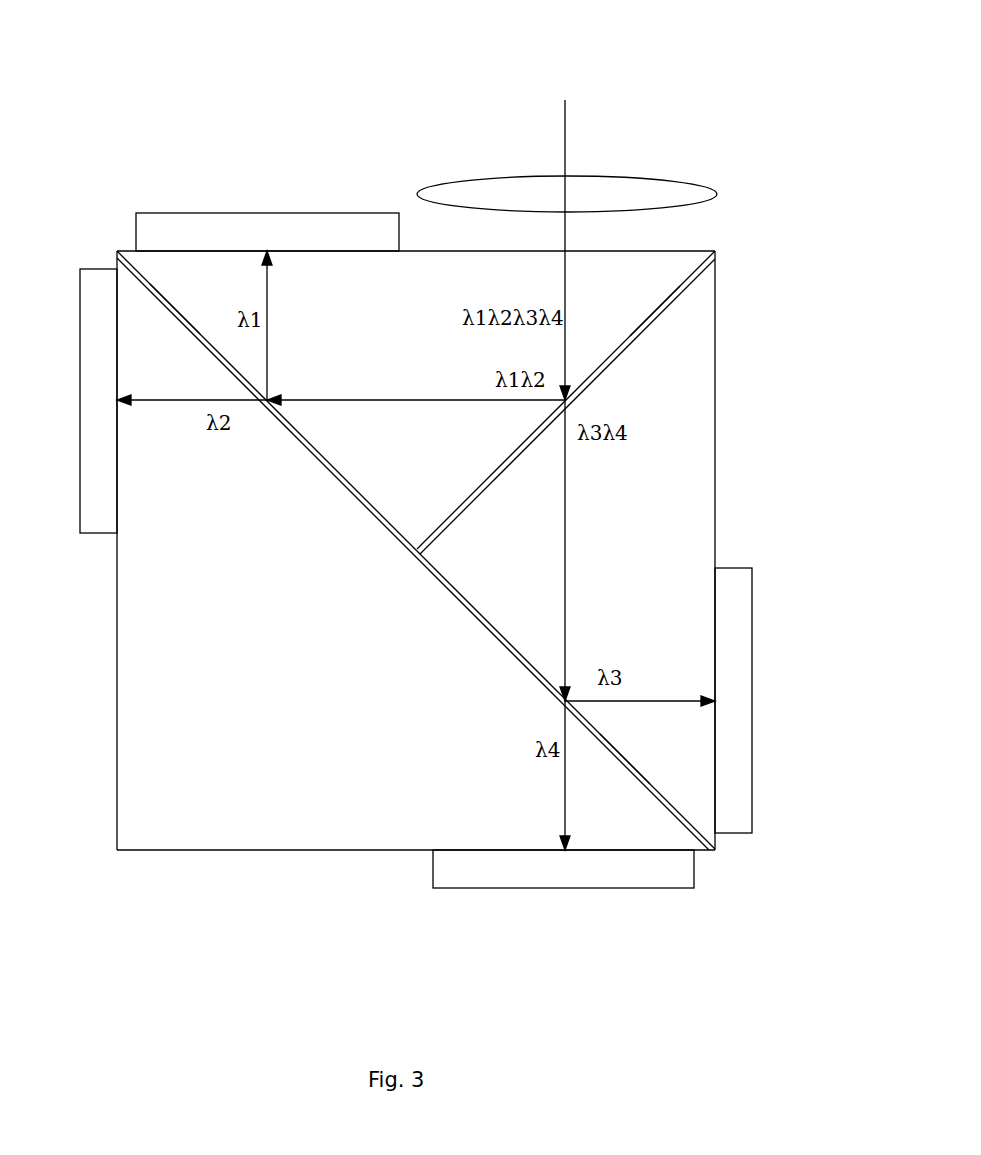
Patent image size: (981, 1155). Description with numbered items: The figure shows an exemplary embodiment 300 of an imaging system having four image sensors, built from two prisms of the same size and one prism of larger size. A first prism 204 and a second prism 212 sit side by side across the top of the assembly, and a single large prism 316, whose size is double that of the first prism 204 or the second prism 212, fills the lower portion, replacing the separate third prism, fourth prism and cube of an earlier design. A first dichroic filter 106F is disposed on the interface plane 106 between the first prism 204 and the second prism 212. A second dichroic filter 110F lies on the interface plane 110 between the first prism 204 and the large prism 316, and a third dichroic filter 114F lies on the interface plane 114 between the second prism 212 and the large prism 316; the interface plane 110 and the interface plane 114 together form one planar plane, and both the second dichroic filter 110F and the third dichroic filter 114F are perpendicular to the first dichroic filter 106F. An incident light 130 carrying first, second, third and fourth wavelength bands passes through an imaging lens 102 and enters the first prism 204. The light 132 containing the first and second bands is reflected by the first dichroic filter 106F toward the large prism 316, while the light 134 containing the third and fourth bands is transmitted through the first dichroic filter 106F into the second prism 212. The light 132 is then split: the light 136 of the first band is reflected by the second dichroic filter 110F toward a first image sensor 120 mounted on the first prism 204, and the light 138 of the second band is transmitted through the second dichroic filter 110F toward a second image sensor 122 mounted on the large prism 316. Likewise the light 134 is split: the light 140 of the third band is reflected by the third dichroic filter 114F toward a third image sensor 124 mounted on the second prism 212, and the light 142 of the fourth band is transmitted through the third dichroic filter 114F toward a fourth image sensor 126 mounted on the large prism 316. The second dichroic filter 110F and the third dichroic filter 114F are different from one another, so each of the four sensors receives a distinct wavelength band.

The imaging system embodiment 300 is at (174, 68).
The incident light 130 is at (568, 135).
The imaging lens 102 is at (650, 176).
The first image sensor 120 is at (200, 212).
The second dichroic filter 110F is at (177, 312).
The first prism 204 is at (435, 287).
The light having first wavelength band 136 is at (267, 362).
The first dichroic filter 106F is at (655, 296).
The light having second wavelength band 138 is at (238, 375).
The light having first and second wavelength bands 132 is at (425, 400).
The second image sensor 122 is at (80, 478).
The interface plane of first prism and large prism 110 is at (337, 480).
The interface plane of first prism and second prism 106 is at (498, 475).
The light having third and fourth wavelength bands 134 is at (567, 530).
The second prism 212 is at (695, 539).
The third image sensor 124 is at (752, 626).
The light having third wavelength band 140 is at (652, 700).
The interface plane of second prism and large prism 114 is at (522, 667).
The third dichroic filter 114F is at (678, 757).
The light having fourth wavelength band 142 is at (567, 815).
The large prism 316 is at (225, 771).
The fourth image sensor 126 is at (690, 880).